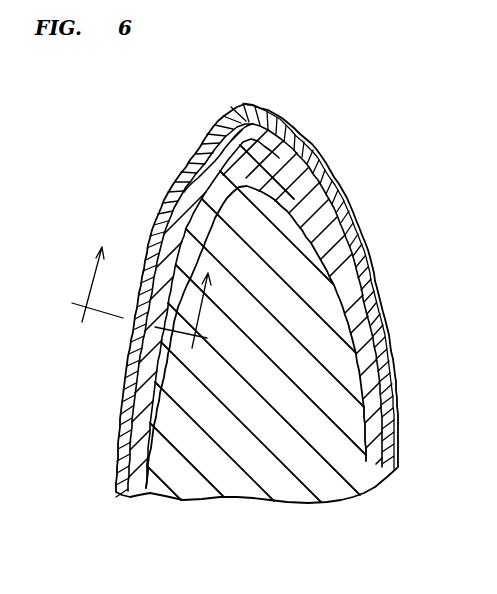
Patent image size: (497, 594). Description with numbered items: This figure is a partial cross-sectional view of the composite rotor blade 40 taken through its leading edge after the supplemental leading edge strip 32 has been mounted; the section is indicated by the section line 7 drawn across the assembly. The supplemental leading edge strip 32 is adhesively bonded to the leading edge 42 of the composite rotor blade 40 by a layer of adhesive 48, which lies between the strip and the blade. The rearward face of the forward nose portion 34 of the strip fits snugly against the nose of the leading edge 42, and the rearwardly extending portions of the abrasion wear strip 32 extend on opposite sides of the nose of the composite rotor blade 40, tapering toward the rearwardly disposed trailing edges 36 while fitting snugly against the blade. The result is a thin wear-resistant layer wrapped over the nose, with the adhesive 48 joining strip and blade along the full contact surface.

The section line 7- 7 is at (137, 305).
The supplemental leading edge strip 32 is at (172, 180).
The forward nose portion 34 is at (240, 106).
The trailing edges 36 is at (122, 392).
The composite rotor blade 40 is at (250, 455).
The leading edge 42 is at (252, 107).
The adhesive 48 is at (200, 145).